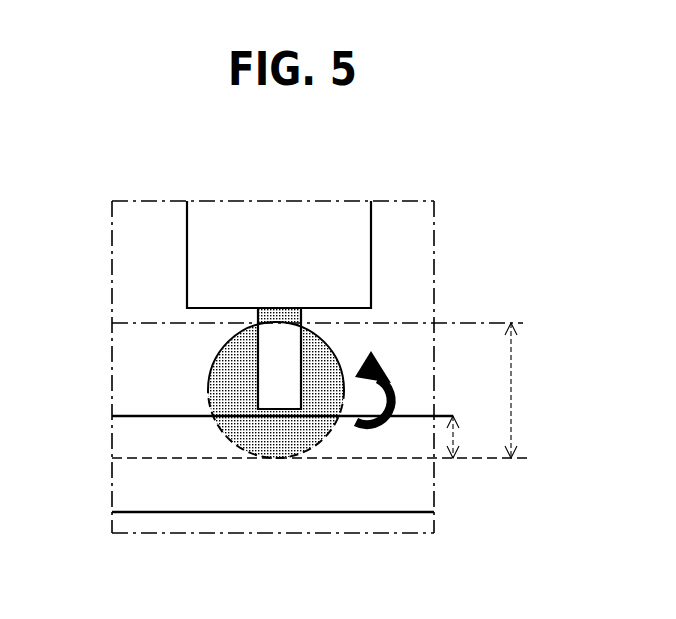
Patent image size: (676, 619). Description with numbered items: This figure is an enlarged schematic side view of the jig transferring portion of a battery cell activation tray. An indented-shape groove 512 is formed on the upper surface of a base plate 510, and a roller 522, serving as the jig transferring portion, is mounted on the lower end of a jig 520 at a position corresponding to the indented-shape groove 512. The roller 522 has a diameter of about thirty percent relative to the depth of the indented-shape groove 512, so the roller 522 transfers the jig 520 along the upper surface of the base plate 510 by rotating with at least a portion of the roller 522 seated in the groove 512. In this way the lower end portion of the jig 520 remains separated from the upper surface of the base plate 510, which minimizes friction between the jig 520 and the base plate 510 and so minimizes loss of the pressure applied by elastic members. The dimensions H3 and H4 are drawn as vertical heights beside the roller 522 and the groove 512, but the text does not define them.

The base plate 510 is at (345, 483).
The indented-shape groove 512 is at (184, 445).
The jig 520 is at (242, 218).
The roller 522 is at (192, 350).
The height H3 is at (528, 390).
The height H4 is at (456, 435).